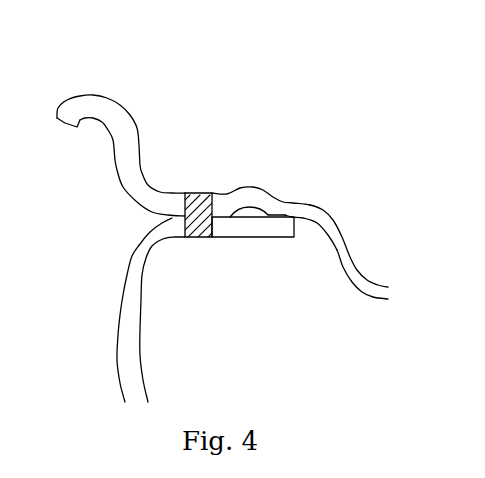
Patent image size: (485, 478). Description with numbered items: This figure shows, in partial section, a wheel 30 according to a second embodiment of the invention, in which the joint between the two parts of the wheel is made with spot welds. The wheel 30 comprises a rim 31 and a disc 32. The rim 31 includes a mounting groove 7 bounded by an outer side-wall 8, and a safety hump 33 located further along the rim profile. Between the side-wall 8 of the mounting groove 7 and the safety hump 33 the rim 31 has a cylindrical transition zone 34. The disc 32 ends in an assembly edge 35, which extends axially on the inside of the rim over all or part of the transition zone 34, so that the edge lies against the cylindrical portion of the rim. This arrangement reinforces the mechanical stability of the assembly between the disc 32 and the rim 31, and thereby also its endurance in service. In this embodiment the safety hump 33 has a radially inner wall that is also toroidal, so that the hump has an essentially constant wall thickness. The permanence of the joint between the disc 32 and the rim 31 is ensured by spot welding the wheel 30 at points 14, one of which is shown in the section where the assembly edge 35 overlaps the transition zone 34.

The wheel 30 is at (262, 128).
The rim 31 is at (258, 165).
The disc 32 is at (115, 265).
The safety hump 33 is at (256, 196).
The cylindrical transition zone 34 is at (302, 210).
The assembly edge 35 is at (254, 222).
The spot weld 14 is at (201, 215).
The mounting groove 7 is at (381, 291).
The outer side-wall 8 is at (340, 250).